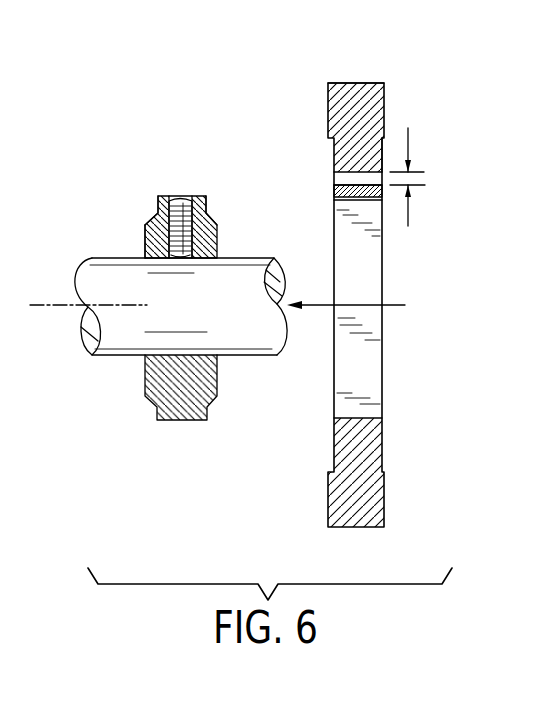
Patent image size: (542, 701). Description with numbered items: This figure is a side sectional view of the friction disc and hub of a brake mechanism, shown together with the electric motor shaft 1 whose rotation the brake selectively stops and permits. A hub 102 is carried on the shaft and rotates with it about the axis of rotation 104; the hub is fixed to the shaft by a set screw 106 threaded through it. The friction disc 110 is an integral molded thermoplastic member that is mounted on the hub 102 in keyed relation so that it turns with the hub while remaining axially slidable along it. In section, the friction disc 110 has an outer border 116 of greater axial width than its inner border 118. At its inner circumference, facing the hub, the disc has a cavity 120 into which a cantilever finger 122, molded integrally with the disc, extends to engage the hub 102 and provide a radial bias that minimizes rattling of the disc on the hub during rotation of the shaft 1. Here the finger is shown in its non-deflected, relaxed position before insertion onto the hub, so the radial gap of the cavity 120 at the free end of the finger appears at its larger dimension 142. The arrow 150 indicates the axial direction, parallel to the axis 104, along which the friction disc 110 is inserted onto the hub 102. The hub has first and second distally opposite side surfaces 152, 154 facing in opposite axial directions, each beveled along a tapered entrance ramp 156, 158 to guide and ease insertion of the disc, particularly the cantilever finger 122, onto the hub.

The electric motor shaft 1 is at (122, 337).
The hub 102 is at (188, 412).
The axis of rotation 104 is at (58, 308).
The set screw 106 is at (177, 198).
The friction disc 110 is at (356, 518).
The outer border 116 is at (385, 110).
The inner border 118 is at (382, 150).
The cavity 120 is at (337, 178).
The cantilever finger 122 is at (337, 193).
The larger dimension 142 is at (408, 142).
The arrow 150 is at (313, 309).
The first side surface 152 is at (218, 239).
The second side surface 154 is at (145, 241).
The tapered entrance ramp 156 is at (207, 215).
The tapered entrance ramp 158 is at (146, 215).